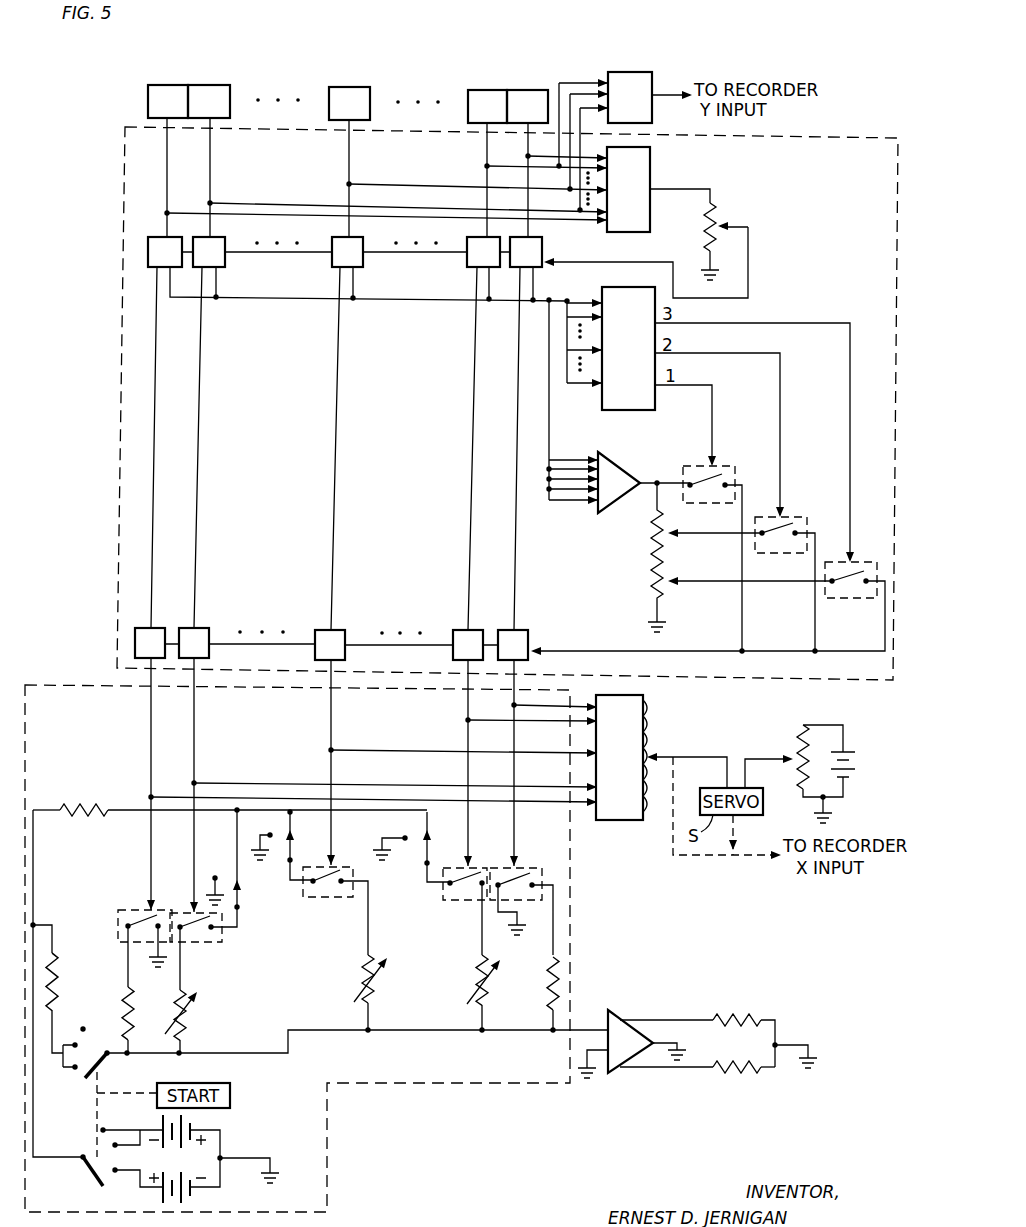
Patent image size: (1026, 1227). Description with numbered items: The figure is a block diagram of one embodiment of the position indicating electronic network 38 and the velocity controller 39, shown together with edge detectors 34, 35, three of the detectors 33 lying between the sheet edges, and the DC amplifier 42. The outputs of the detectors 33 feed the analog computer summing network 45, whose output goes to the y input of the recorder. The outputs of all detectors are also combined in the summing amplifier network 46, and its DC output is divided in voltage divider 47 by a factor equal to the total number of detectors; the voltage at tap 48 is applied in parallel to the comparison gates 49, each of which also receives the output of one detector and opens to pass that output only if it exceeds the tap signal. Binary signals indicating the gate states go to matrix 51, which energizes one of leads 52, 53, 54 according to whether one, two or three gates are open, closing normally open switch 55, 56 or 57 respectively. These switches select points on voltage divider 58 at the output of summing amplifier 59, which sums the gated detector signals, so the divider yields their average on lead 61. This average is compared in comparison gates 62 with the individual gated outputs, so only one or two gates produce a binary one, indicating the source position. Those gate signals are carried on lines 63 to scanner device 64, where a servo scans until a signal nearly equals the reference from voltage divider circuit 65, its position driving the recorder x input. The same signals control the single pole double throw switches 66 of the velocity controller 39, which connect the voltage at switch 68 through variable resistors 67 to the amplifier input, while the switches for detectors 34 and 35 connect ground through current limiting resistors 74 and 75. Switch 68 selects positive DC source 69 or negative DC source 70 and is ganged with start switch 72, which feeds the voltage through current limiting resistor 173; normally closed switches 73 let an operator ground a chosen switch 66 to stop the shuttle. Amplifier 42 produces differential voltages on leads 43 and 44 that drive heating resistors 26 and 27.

The heating resistor 26 is at (733, 1072).
The heating resistor 27 is at (742, 1017).
The detector 33 is at (215, 85).
The detector 34 is at (166, 72).
The detector 35 is at (527, 90).
The position indicating electronic network 38 is at (118, 403).
The velocity controller 39 is at (572, 945).
The DC amplifier 42 is at (612, 1012).
The differential output lead 43 is at (657, 1067).
The differential output lead 44 is at (675, 1020).
The analog computer summing network 45 is at (645, 72).
The analog computer summing amplifier network 46 is at (618, 232).
The voltage divider 47 is at (704, 216).
The tap 48 is at (745, 228).
The comparison gate 49 is at (290, 236).
The matrix 51 is at (636, 410).
The lead 52 is at (712, 405).
The lead 53 is at (780, 405).
The lead 54 is at (850, 405).
The normally open switch 55 is at (700, 465).
The normally open switch 56 is at (759, 517).
The normally open switch 57 is at (827, 562).
The voltage divider 58 is at (648, 558).
The DC summing amplifier 59 is at (616, 508).
The lead 61 is at (171, 636).
The comparison gate 62 is at (276, 626).
The lines 63 is at (194, 733).
The scanner device 64 is at (646, 700).
The voltage divider circuit 65 is at (830, 724).
The single pole double throw switch 66 is at (207, 942).
The variable resistor 67 is at (188, 1019).
The switch 68 is at (81, 1170).
The positive DC source 69 is at (194, 1191).
The negative DC source 70 is at (196, 1120).
The start switch 72 is at (103, 1043).
The normally closed switch 73 is at (237, 896).
The current limiting resistor 74 is at (133, 1016).
The current limiting resistor 75 is at (550, 993).
The current limiting resistor 173 is at (57, 972).